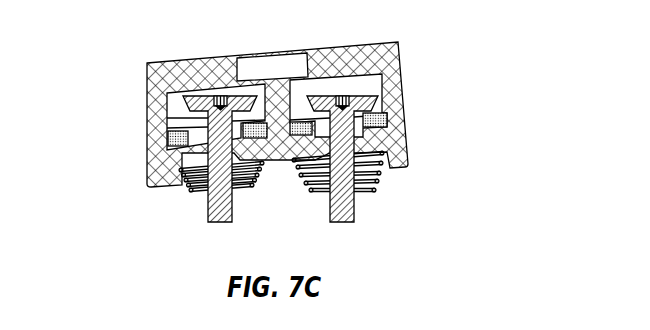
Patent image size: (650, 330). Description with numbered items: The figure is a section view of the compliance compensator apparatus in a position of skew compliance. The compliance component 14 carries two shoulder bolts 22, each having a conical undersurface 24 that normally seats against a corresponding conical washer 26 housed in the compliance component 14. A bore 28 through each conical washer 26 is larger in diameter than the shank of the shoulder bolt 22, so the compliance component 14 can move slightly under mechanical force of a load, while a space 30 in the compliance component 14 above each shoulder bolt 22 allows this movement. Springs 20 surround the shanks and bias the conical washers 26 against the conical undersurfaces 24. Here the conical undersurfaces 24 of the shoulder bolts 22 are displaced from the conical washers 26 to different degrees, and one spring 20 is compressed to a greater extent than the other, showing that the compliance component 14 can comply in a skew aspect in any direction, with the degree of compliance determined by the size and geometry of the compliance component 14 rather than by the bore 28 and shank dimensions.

The compliance component 14 is at (249, 138).
The spring 20 is at (364, 194).
The shoulder bolt 22 is at (360, 177).
The conical undersurface 24 is at (178, 118).
The conical washer 26 is at (382, 120).
The bore 28 is at (189, 144).
The space 30 is at (366, 88).